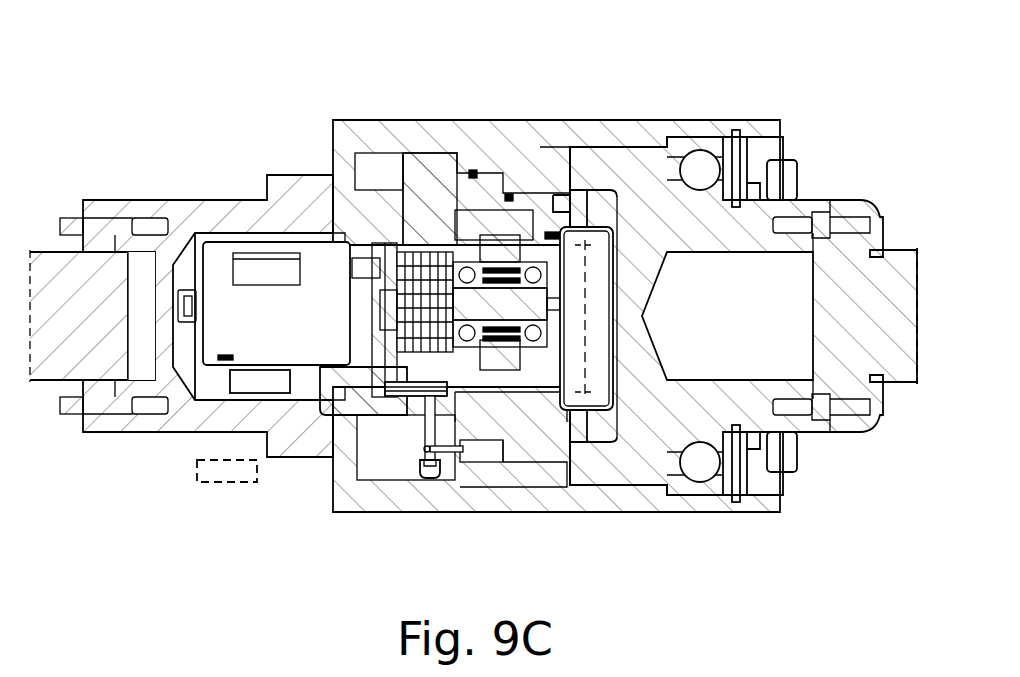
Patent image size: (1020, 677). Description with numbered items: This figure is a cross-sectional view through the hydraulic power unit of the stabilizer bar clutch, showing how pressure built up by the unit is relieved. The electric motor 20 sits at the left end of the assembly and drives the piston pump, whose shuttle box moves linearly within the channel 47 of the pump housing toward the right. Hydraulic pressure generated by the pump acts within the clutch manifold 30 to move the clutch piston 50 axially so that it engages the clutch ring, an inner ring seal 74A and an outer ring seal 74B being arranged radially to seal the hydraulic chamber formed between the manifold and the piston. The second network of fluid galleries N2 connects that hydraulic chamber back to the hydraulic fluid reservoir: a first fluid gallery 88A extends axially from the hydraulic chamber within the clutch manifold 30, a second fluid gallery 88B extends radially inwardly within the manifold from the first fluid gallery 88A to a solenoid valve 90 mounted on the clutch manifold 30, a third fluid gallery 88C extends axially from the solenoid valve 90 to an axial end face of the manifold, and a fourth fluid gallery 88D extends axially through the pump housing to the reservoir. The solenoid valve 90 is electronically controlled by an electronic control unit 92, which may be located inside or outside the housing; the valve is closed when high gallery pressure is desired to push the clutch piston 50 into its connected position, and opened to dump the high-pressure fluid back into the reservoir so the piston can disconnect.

The electric motor 20 is at (221, 257).
The clutch manifold 30 is at (422, 165).
The outer ring seal 74B is at (471, 171).
The inner ring seal 74A is at (510, 198).
The clutch piston 50 is at (540, 237).
The channel 47 is at (595, 240).
The electronic control unit 92 is at (250, 383).
The solenoid valve 90 is at (333, 404).
The second network of fluid galleries N2 is at (435, 489).
The second fluid gallery 88B is at (418, 427).
The third fluid gallery 88C is at (432, 442).
The first fluid gallery 88A is at (447, 457).
The fourth fluid gallery 88D is at (527, 385).